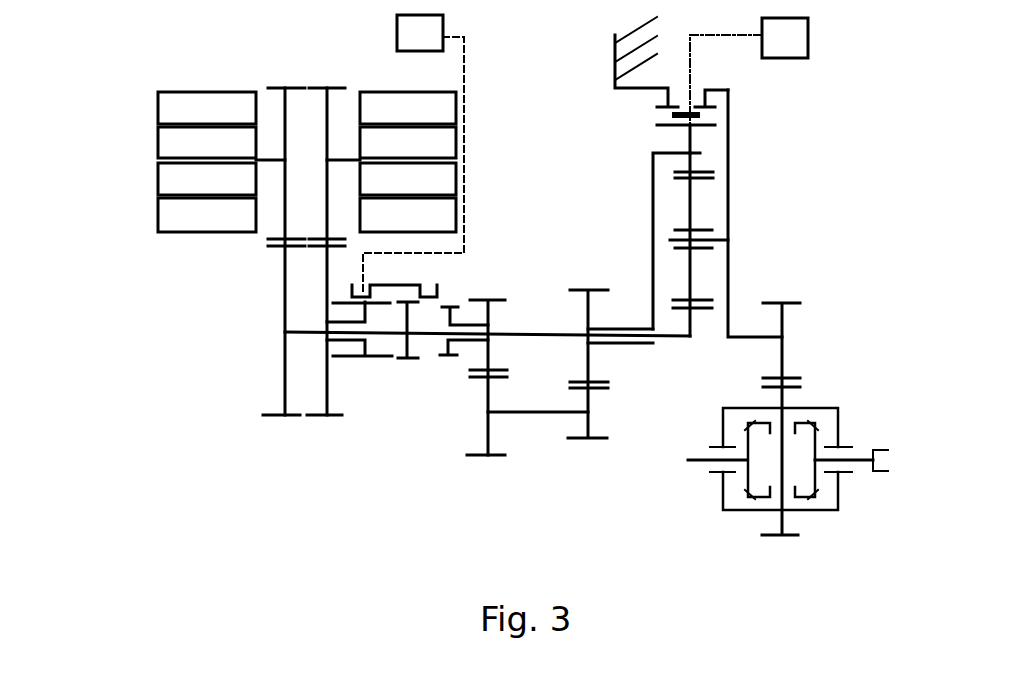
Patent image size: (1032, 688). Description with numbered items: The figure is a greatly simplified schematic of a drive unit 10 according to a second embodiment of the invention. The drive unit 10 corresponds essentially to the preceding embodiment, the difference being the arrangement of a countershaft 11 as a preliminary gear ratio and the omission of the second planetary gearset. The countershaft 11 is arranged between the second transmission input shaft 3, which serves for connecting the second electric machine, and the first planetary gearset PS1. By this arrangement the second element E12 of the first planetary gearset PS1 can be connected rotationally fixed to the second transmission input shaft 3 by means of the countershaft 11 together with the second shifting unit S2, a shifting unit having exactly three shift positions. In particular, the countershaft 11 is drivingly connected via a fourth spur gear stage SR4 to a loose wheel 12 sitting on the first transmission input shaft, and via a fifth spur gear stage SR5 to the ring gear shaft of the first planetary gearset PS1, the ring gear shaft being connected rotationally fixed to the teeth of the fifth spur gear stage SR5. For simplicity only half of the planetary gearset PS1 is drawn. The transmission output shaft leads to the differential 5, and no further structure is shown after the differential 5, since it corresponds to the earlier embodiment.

The drive unit 10 is at (124, 40).
The second transmission input shaft 3 is at (343, 347).
The second shifting unit S2 is at (408, 407).
The loose wheel 12 is at (496, 309).
The fourth spur gear stage SR4 is at (488, 483).
The countershaft 11 is at (530, 413).
The fifth spur gear stage SR5 is at (593, 468).
The first planetary gearset PS1 is at (696, 362).
The second element E12 is at (693, 165).
The differential 5 is at (834, 525).